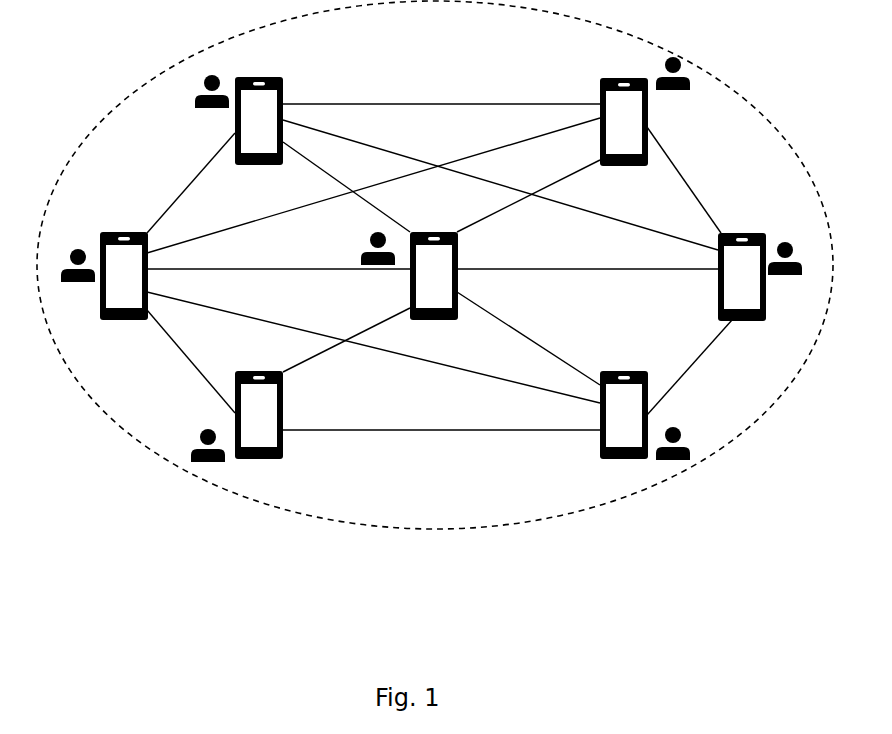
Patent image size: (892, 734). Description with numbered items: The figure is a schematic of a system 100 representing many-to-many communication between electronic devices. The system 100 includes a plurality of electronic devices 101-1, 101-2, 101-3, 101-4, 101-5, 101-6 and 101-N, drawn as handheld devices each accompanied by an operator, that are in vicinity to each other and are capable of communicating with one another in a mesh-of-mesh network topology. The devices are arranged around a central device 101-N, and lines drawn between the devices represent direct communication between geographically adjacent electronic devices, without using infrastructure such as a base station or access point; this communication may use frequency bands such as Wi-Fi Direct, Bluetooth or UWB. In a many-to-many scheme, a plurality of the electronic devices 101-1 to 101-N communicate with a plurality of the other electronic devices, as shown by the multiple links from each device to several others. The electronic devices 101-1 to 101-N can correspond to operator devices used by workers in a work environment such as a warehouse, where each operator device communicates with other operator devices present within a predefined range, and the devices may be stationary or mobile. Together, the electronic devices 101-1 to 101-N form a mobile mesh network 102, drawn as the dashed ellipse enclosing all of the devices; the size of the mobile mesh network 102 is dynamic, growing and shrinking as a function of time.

The system 100 is at (108, 62).
The mobile mesh network 102 is at (726, 81).
The electronic device 101-1 is at (265, 111).
The electronic device 101-2 is at (615, 111).
The electronic device 101-3 is at (760, 266).
The electronic device 101-4 is at (635, 432).
The electronic device 101-5 is at (244, 429).
The electronic device 101-6 is at (104, 290).
The electronic device 101-N is at (445, 276).